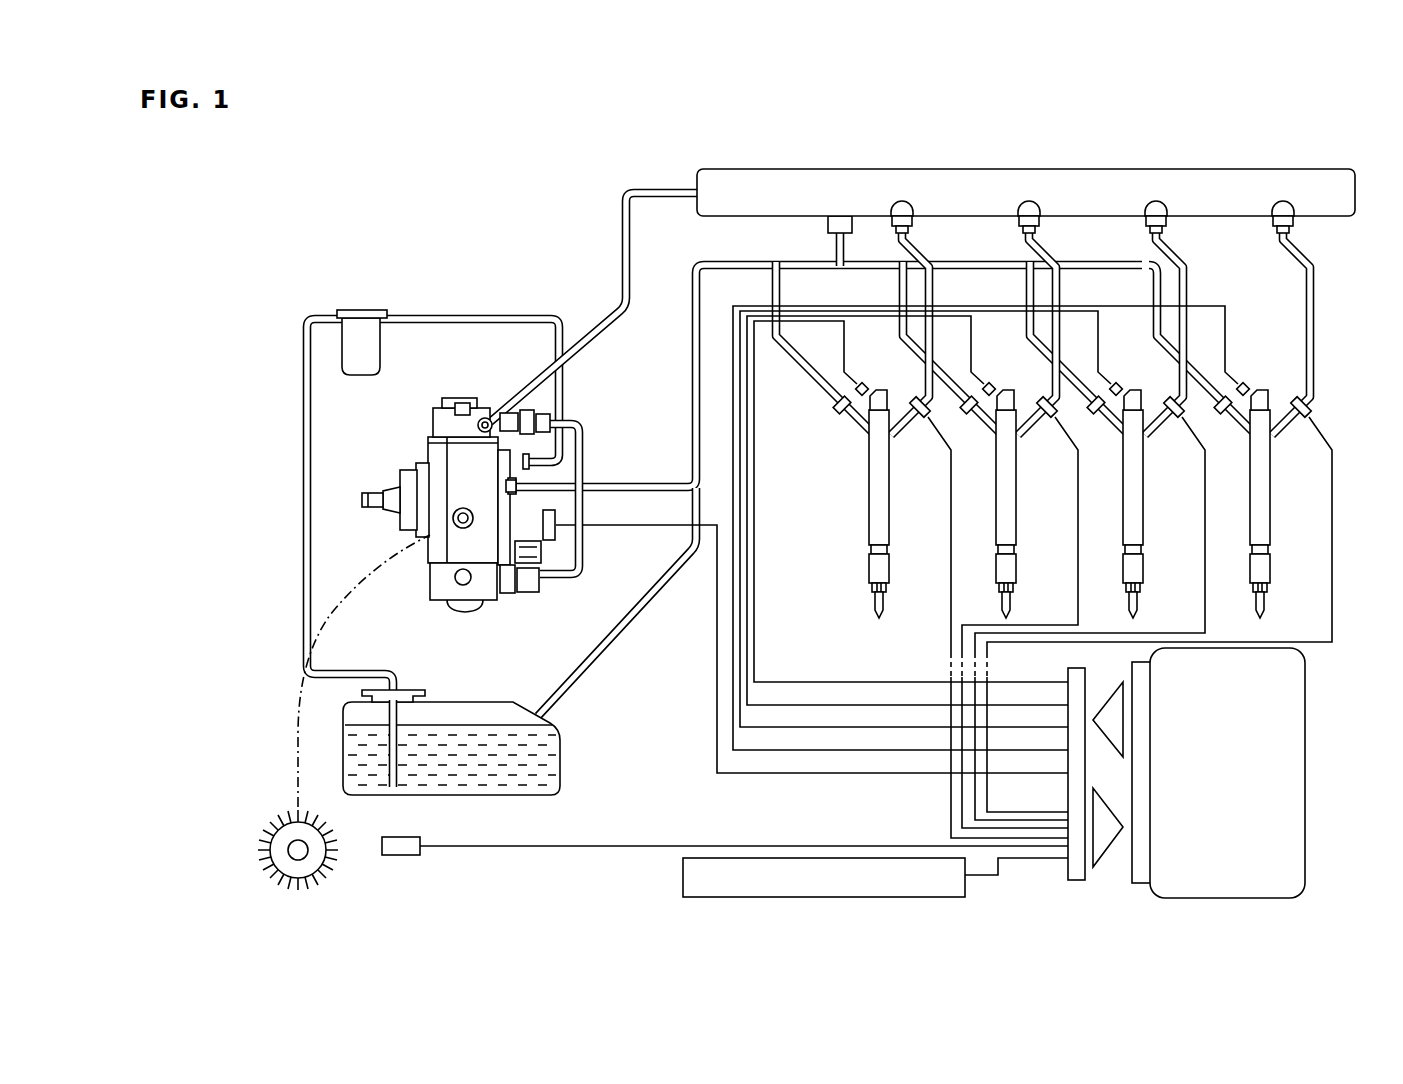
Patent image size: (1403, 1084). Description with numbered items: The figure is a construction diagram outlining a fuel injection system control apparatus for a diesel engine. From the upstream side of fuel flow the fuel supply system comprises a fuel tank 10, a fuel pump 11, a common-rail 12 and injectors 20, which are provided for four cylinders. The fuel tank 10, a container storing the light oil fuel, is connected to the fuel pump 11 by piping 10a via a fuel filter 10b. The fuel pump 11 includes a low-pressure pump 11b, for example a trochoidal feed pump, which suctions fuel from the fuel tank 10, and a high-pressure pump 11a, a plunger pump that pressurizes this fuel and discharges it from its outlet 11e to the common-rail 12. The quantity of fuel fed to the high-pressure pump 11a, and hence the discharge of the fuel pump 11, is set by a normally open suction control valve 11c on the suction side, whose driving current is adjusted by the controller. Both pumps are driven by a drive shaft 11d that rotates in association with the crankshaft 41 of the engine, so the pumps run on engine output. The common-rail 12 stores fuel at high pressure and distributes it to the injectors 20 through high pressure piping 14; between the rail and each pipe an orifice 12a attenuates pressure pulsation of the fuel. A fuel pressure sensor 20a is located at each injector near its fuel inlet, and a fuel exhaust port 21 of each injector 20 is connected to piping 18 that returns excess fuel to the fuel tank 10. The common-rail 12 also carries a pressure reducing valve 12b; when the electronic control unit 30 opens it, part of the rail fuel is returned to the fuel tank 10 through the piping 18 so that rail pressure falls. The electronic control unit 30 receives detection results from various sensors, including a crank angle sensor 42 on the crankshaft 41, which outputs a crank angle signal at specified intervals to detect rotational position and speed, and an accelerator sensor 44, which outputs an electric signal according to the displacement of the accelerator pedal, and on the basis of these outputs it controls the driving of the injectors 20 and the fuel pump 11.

The fuel tank 10 is at (483, 702).
The piping 10a is at (303, 484).
The fuel filter 10b is at (378, 342).
The fuel pump 11 is at (489, 471).
The high-pressure pump 11a is at (458, 398).
The low-pressure pump 11b is at (533, 515).
The suction control valve 11c is at (557, 519).
The drive shaft 11d is at (370, 494).
The outlet 11e is at (486, 420).
The common-rail 12 is at (1105, 190).
The orifice 12a is at (911, 227).
The pressure reducing valve 12b is at (830, 232).
The high pressure piping 14 is at (933, 291).
The piping 18 is at (748, 262).
The injectors 20 is at (891, 485).
The fuel pressure sensor 20a is at (907, 393).
The fuel exhaust port 21 is at (836, 411).
The electronic control unit 30 is at (1306, 770).
The crankshaft 41 is at (293, 860).
The crank angle sensor 42 is at (402, 857).
The accelerator sensor 44 is at (828, 899).